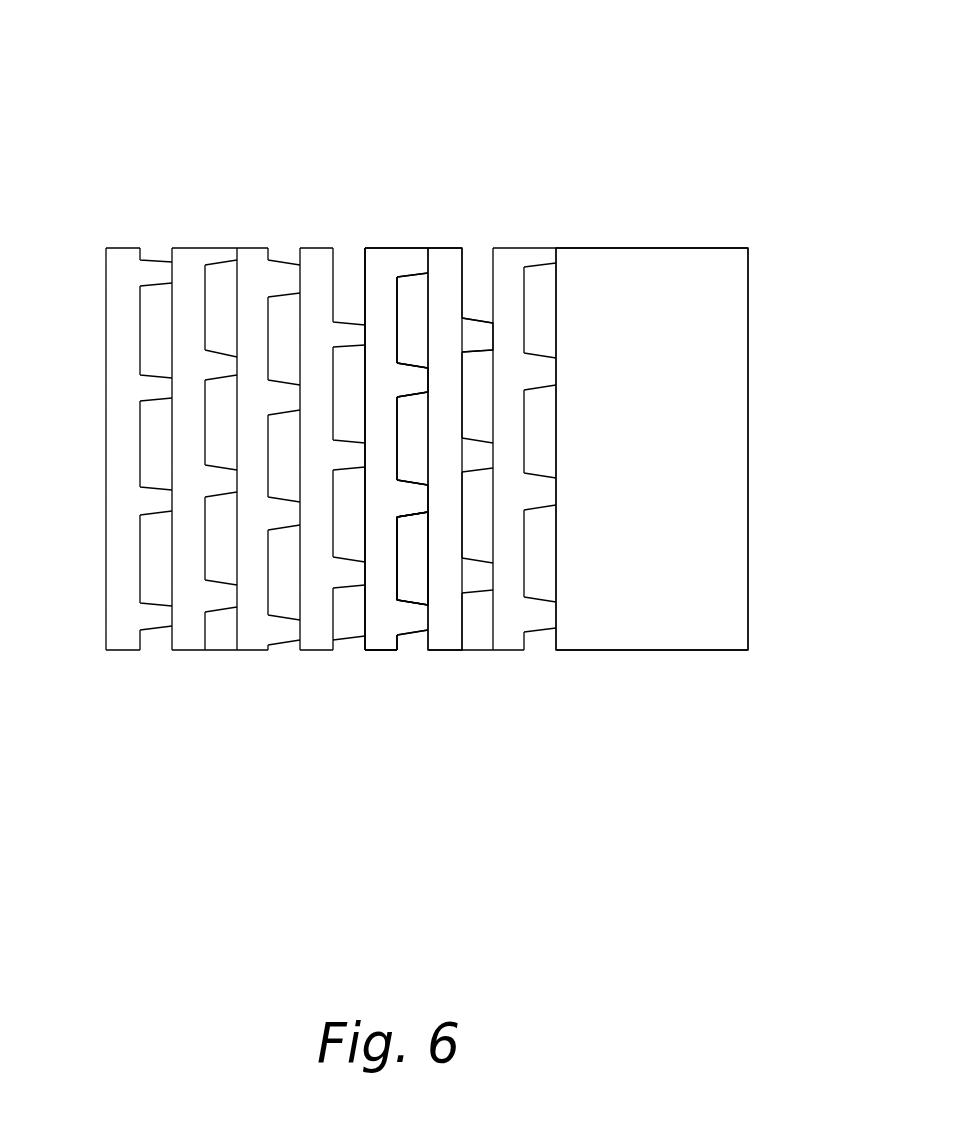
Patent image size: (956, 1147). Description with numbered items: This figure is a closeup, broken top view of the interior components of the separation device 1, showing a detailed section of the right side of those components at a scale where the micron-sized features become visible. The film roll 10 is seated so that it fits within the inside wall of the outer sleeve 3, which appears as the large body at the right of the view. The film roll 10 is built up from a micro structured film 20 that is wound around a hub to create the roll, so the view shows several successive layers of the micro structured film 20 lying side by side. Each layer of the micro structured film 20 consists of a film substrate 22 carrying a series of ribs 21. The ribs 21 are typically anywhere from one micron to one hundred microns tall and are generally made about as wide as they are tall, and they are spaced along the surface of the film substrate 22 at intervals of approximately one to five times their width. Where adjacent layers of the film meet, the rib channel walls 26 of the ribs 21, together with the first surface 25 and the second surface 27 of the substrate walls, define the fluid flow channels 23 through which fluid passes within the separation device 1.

The separation device 1 is at (117, 208).
The outer sleeve 3 is at (610, 572).
The film roll 10 is at (403, 248).
The micro structured film 20 is at (375, 305).
The ribs 21 is at (485, 338).
The film substrate 22 is at (379, 395).
The fluid flow channels 23 is at (412, 575).
The first surface of the substrate wall 25 is at (398, 558).
The rib channel walls 26 is at (428, 512).
The second surface of the substrate wall 27 is at (430, 555).